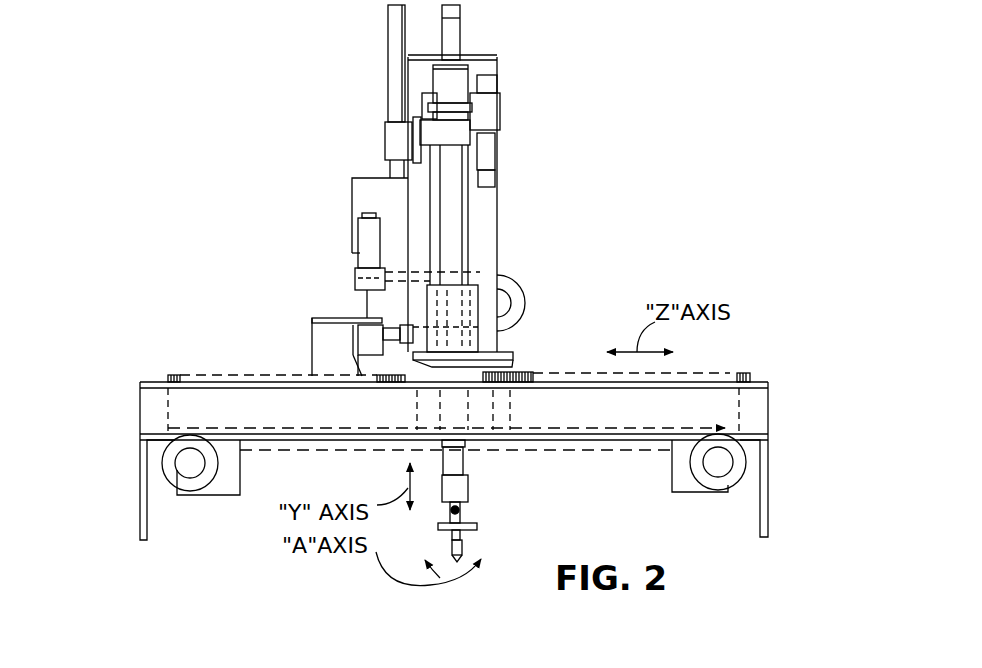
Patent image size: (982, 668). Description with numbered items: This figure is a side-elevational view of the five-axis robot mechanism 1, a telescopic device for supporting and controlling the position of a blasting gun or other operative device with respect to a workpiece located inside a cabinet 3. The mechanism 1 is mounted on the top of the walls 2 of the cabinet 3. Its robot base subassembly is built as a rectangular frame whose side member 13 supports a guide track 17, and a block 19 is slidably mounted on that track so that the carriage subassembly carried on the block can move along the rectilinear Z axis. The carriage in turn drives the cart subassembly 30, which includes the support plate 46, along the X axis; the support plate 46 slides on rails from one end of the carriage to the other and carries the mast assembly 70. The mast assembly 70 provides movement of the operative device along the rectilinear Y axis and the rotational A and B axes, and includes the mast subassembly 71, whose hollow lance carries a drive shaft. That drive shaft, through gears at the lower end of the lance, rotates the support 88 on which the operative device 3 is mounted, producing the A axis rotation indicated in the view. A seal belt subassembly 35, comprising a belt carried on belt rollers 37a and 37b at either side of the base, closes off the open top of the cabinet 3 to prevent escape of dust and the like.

The five-axis robot mechanism 1 is at (520, 228).
The walls 2 is at (142, 488).
The cabinet 3 is at (470, 555).
The side member 13 is at (763, 400).
The guide track 17 is at (275, 382).
The block 19 is at (523, 372).
The cart subassembly 30 is at (411, 335).
The seal belt subassembly 35 is at (322, 425).
The belt roller 37a is at (707, 464).
The belt roller 37b is at (215, 473).
The support plate 46 is at (500, 343).
The mast assembly 70 is at (471, 207).
The mast subassembly 71 is at (455, 258).
The support 88 is at (470, 523).